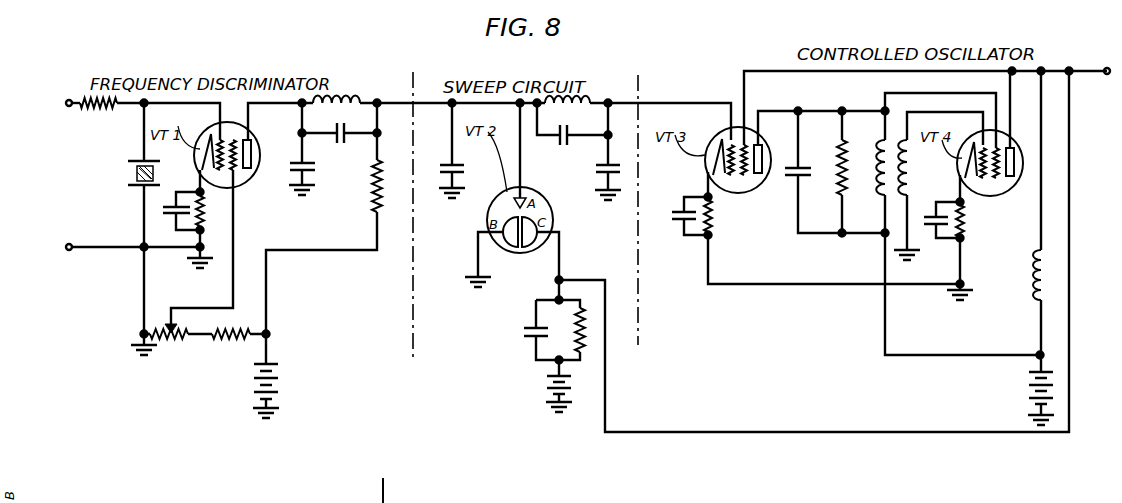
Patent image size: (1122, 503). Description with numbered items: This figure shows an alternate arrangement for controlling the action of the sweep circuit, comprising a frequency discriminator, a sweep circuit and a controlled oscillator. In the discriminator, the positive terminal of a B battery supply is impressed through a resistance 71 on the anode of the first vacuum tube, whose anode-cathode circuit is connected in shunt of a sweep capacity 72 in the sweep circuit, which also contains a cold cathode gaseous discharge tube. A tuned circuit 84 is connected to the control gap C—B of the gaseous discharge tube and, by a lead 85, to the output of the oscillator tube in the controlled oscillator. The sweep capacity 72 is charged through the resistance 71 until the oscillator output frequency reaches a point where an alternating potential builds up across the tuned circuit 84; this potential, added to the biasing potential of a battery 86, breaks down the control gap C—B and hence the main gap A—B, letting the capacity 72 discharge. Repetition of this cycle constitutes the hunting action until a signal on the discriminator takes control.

The resistance 71 is at (370, 196).
The sweep capacity 72 is at (443, 172).
The tuned circuit 84 is at (545, 343).
The lead 85 is at (807, 430).
The battery 86 is at (575, 385).